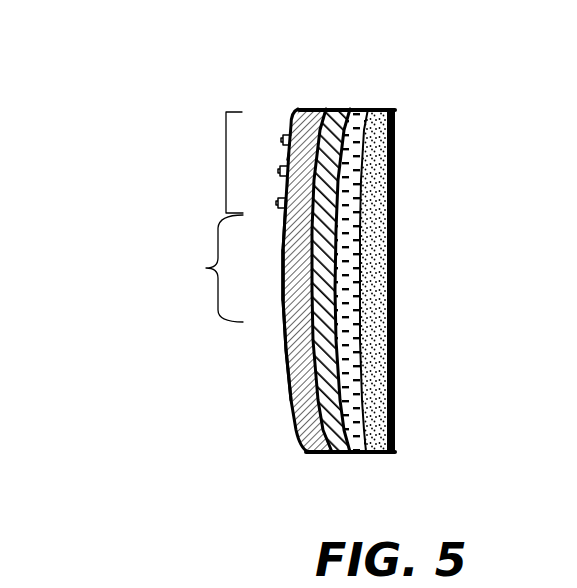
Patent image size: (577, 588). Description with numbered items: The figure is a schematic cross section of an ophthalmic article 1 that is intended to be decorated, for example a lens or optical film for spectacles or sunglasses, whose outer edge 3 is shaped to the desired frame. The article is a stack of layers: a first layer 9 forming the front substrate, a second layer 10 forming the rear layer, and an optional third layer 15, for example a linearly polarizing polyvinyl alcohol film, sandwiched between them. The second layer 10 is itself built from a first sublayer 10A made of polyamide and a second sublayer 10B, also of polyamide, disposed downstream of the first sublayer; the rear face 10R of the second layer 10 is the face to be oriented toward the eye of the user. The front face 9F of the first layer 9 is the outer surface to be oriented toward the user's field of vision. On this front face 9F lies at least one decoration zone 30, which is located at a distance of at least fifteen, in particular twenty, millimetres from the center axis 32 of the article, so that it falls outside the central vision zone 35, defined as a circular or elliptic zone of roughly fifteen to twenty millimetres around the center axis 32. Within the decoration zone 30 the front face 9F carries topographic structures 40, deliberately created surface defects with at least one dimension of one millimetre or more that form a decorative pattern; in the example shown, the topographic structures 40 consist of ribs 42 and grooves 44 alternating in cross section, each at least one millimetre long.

The ophthalmic article 1 is at (482, 97).
The outer edge 3 is at (404, 91).
The first layer 9 is at (314, 110).
The front face 9F is at (284, 337).
The second layer 10 is at (357, 103).
The first sublayer 10A is at (360, 454).
The second sublayer 10B is at (380, 454).
The rear face 10R is at (395, 232).
The third layer 15 is at (355, 454).
The decoration zone 30 is at (280, 202).
The center axis 32 is at (256, 282).
The central vision zone 35 is at (205, 268).
The topographic structures 40 is at (233, 127).
The ribs 42 is at (280, 170).
The grooves 44 is at (278, 188).